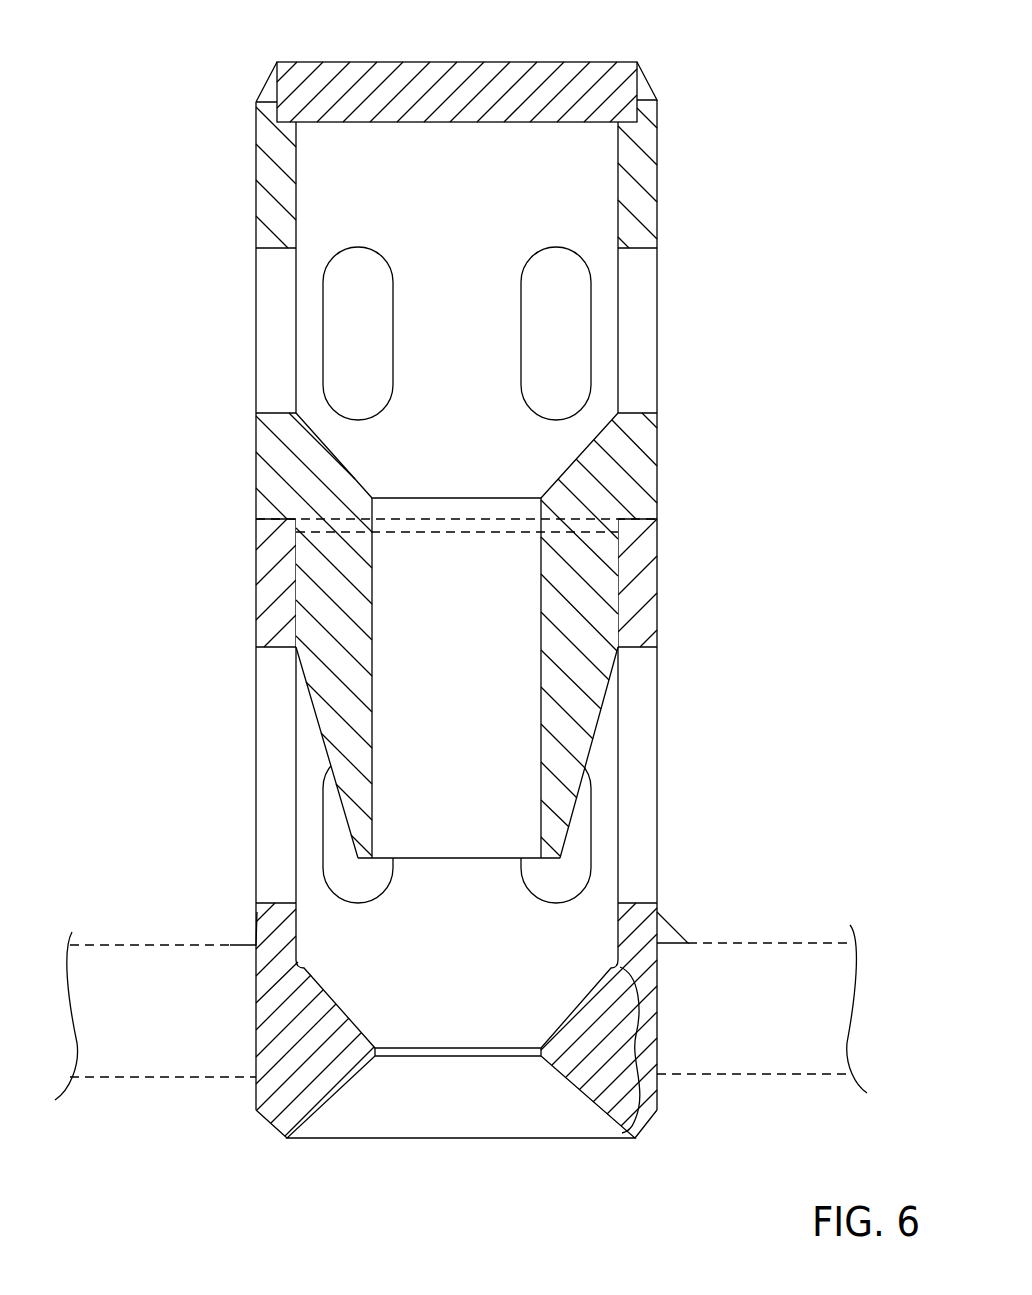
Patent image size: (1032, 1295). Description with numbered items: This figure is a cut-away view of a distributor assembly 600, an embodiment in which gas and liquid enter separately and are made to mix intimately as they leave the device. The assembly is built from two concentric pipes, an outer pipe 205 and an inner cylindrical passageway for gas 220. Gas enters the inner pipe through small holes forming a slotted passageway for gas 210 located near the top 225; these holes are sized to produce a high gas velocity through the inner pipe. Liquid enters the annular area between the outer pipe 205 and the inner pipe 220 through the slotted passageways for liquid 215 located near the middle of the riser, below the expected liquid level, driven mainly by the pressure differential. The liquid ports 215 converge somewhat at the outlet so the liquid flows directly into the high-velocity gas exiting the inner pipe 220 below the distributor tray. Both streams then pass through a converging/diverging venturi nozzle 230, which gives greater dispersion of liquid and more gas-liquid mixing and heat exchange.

The distributor assembly 600 is at (192, 417).
The outer pipe 205 is at (655, 484).
The slotted passageway for gas 210 is at (348, 333).
The slotted passageway for liquid 215 is at (335, 830).
The cylindrical passageway for gas 220 is at (543, 662).
The top 225 is at (522, 62).
The venturi nozzle 230 is at (655, 1047).